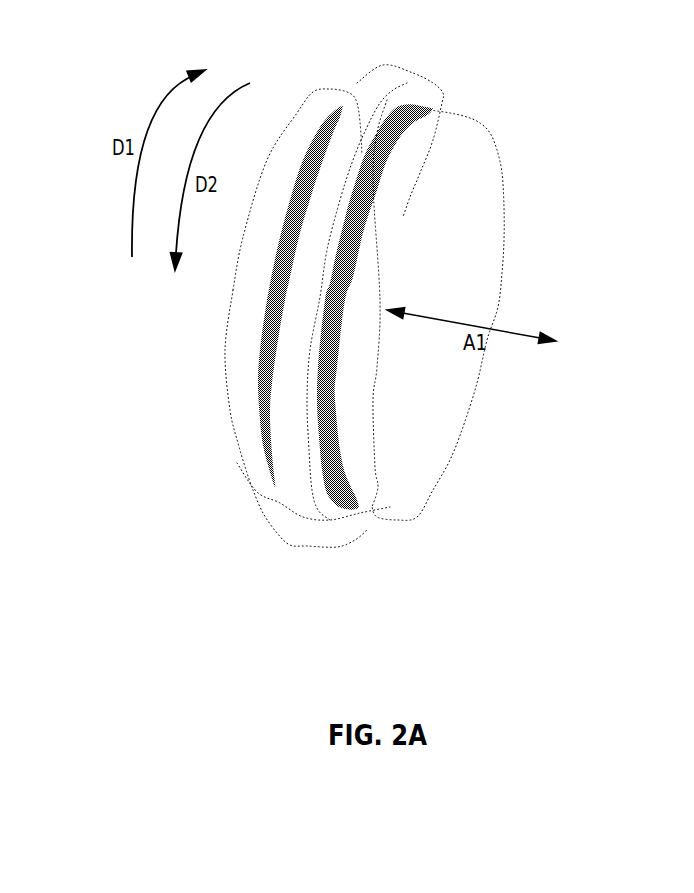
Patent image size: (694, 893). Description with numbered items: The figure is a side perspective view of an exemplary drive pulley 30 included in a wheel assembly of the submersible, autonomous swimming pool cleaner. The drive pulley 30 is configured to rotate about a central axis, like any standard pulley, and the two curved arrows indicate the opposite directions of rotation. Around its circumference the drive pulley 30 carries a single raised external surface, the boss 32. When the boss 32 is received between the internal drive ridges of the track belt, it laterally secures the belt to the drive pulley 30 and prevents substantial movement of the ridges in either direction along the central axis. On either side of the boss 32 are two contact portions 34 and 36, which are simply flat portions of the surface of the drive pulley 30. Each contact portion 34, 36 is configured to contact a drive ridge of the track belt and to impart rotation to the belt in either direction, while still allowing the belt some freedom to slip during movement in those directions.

The drive pulley 30 is at (410, 483).
The boss 32 is at (313, 542).
The contact portion 34 is at (330, 436).
The contact portion 36 is at (263, 400).